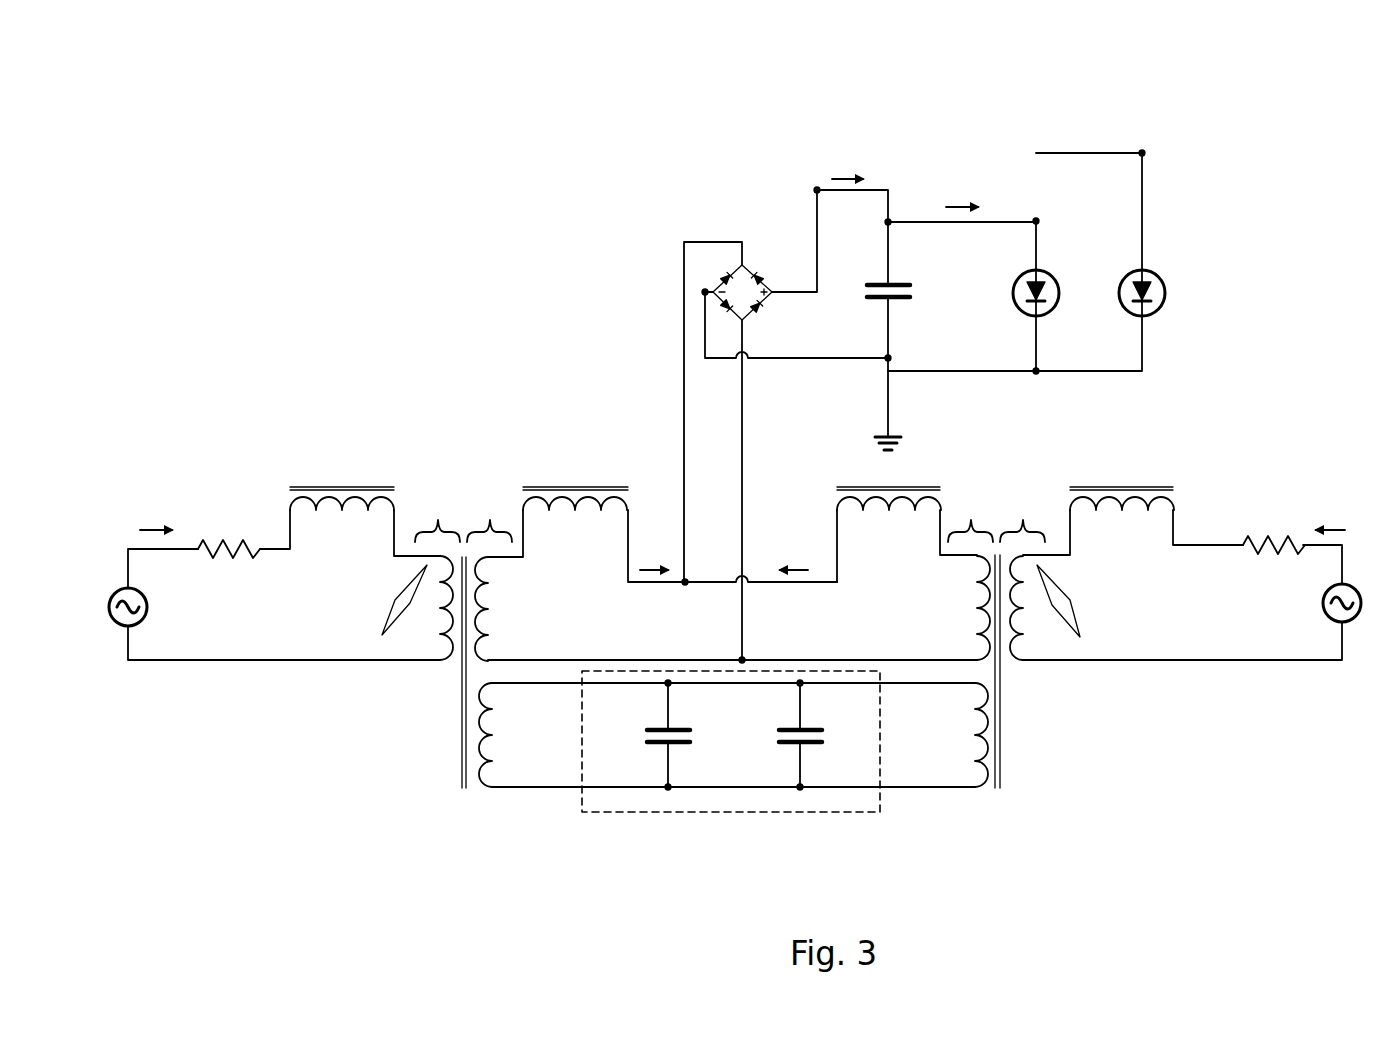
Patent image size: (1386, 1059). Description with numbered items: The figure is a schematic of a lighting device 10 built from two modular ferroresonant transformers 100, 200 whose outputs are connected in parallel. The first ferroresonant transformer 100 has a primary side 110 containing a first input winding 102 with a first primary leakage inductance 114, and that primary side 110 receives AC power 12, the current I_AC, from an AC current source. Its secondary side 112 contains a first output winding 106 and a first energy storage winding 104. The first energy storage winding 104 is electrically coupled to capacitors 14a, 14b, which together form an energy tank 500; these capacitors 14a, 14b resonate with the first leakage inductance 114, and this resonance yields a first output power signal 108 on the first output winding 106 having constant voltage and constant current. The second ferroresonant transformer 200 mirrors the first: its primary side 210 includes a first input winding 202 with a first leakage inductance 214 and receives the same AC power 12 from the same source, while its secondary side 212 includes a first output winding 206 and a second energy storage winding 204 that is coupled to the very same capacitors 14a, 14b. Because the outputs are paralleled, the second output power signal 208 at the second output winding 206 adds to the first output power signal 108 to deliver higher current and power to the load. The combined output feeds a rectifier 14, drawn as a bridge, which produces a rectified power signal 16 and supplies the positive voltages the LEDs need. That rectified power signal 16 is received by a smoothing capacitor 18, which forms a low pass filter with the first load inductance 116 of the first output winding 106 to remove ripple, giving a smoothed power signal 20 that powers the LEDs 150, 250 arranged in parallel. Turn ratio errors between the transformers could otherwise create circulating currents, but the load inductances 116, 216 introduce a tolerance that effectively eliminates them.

The lighting device 10 is at (192, 84).
The AC power 12 is at (155, 493).
The rectifier 14 is at (750, 266).
The capacitor 14a is at (660, 728).
The capacitor 14b is at (802, 728).
The rectified power signal 16 is at (850, 141).
The smoothing capacitor 18 is at (900, 285).
The smoothed power signal 20 is at (959, 168).
The first ferroresonant transformer 100 is at (225, 416).
The first input winding 102 is at (441, 663).
The first energy storage winding 104 is at (502, 787).
The first output winding 106 is at (503, 660).
The first output power signal 108 is at (651, 595).
The primary side 110 is at (437, 509).
The secondary side 112 is at (489, 509).
The first primary leakage inductance 114 is at (290, 510).
The first load inductance 116 is at (628, 525).
The LED 150 is at (1043, 275).
The second ferroresonant transformer 200 is at (1272, 390).
The first input winding 202 is at (1040, 663).
The second energy storage winding 204 is at (950, 787).
The first output winding 206 is at (952, 660).
The second output power signal 208 is at (795, 595).
The primary side 210 is at (1040, 568).
The secondary side 212 is at (970, 509).
The first leakage inductance 214 is at (1173, 510).
The load inductance 216 is at (837, 510).
The LED 250 is at (1148, 275).
The energy tank 500 is at (713, 812).